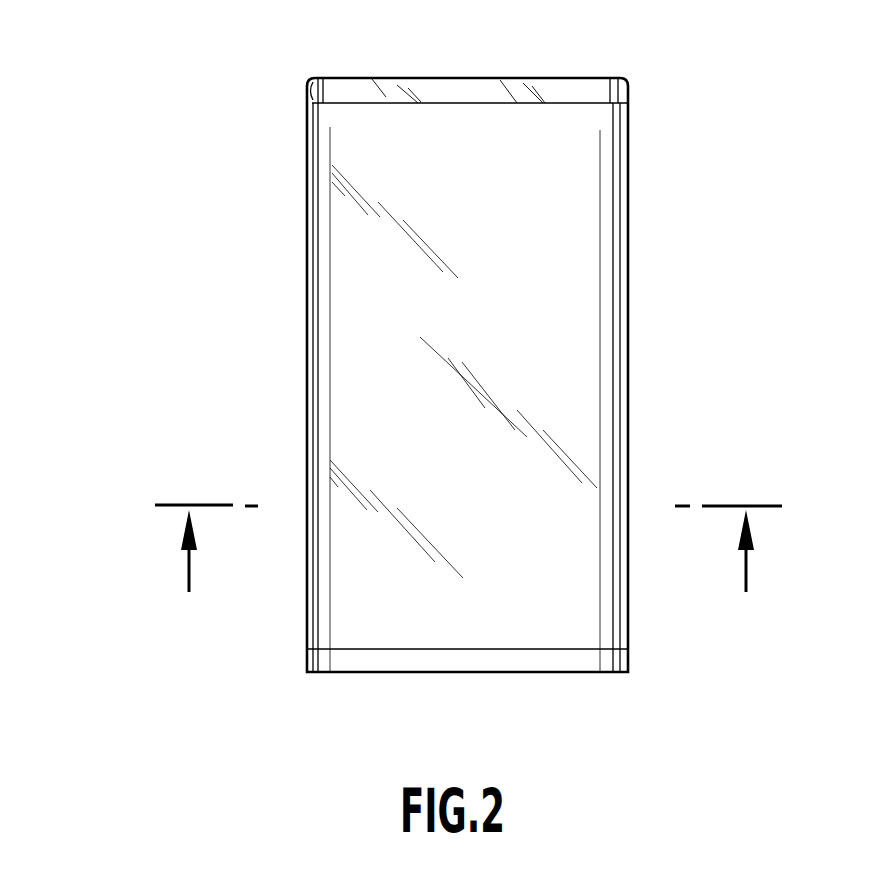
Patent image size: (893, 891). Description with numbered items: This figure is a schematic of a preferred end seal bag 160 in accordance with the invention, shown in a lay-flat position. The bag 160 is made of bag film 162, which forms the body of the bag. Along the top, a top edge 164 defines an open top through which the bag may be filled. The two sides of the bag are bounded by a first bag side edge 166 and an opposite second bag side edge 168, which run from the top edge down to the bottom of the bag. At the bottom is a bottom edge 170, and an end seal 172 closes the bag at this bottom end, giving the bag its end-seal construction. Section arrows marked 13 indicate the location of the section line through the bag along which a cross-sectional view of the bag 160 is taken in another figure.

The end seal bag 160 is at (224, 243).
The bag film 162 is at (582, 160).
The top edge 164 is at (544, 78).
The first bag side edge 166 is at (309, 381).
The second bag side edge 168 is at (624, 252).
The bottom edge 170 is at (578, 675).
The end seal 172 is at (434, 650).
The section 13— 13 is at (479, 552).